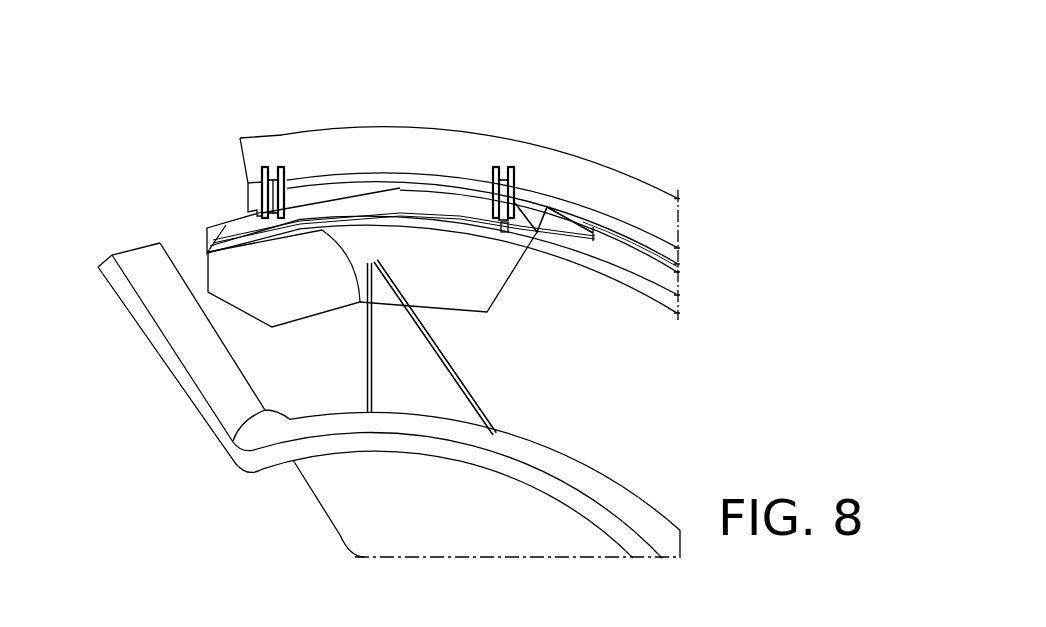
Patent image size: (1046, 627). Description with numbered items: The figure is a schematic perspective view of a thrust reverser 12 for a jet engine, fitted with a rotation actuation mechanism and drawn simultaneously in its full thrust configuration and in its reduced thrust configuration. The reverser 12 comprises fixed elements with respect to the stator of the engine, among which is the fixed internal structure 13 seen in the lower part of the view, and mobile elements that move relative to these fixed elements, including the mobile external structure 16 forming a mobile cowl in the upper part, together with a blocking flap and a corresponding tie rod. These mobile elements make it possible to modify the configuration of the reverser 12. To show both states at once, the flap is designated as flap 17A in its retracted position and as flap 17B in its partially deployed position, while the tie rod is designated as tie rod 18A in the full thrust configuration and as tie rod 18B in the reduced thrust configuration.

The reverser 12 is at (718, 166).
The fixed internal structure 13 is at (198, 400).
The mobile external structure 16 is at (282, 137).
The flap in retracted position 17A is at (470, 212).
The flap in partially deployed position 17B is at (480, 278).
The tie rod in full thrust configuration 18A is at (367, 353).
The tie rod in reduced thrust configuration 18B is at (436, 352).